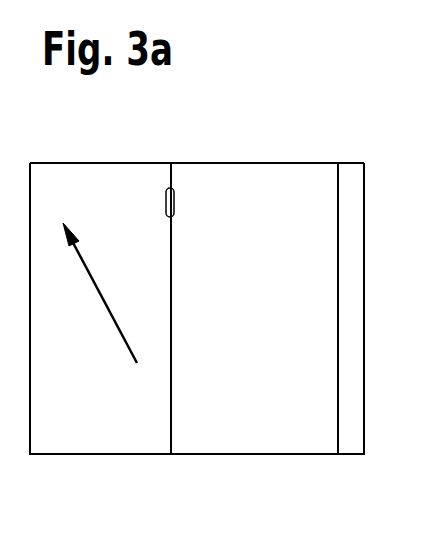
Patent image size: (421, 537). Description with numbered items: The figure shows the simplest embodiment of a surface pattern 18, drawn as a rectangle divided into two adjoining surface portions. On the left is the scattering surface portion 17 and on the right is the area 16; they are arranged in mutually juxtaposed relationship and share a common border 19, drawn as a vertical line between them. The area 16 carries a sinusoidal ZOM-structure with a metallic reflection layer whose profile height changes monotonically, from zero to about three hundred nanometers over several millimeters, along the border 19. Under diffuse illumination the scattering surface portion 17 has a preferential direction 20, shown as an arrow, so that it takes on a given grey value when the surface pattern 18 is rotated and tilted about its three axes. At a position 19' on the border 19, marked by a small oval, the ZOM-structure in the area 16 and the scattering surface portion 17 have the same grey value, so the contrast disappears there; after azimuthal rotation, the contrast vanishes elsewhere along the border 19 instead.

The area 16 is at (276, 440).
The scattering surface portion 17 is at (91, 440).
The surface pattern 18 is at (117, 162).
The border 19 is at (205, 308).
The position 19' is at (206, 199).
The preferential direction 20 is at (93, 277).